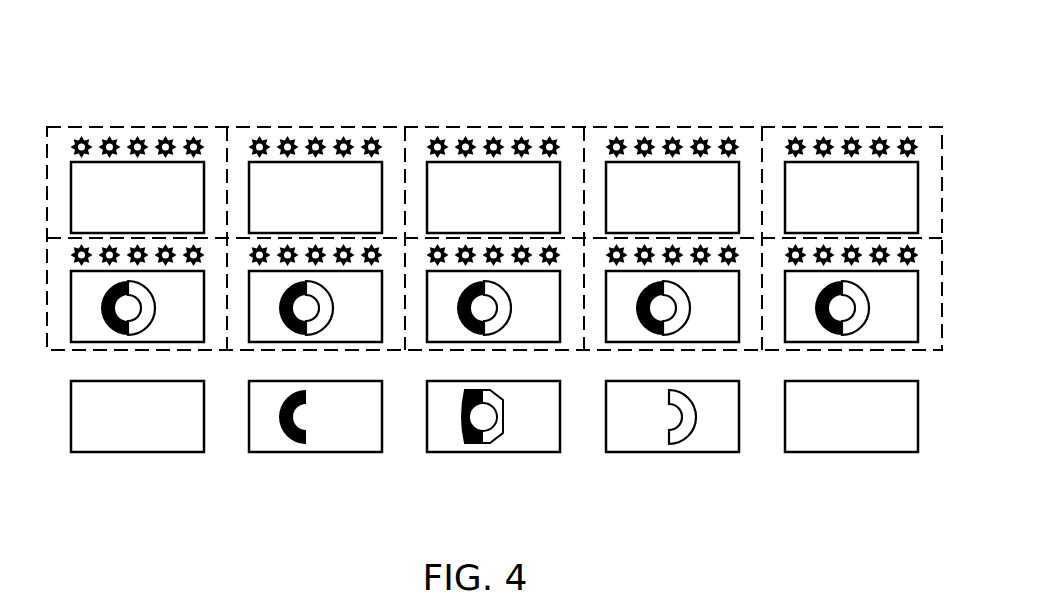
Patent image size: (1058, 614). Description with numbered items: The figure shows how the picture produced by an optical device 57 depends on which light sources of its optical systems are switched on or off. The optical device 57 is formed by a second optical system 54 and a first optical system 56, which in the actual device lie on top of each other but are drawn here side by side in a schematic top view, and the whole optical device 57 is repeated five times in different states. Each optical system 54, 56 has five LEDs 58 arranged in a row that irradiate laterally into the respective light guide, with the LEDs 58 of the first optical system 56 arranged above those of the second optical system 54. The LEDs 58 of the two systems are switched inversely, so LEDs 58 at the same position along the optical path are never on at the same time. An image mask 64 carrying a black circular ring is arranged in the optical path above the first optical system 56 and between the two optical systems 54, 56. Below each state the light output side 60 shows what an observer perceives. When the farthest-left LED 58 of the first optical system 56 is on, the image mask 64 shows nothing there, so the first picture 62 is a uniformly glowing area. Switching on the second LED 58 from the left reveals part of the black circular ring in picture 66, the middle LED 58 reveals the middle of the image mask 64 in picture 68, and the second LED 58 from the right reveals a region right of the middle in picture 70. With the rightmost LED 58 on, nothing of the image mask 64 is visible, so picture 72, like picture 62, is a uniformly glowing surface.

The second optical system 54 is at (504, 137).
The first optical system 56 is at (507, 393).
The optical device 57 is at (116, 92).
The LED 58 is at (82, 135).
The light output side 60 is at (494, 468).
The first picture 62 is at (160, 476).
The image mask 64 is at (102, 324).
The picture 66 is at (360, 468).
The picture 68 is at (468, 461).
The picture 70 is at (640, 466).
The picture 72 is at (845, 468).